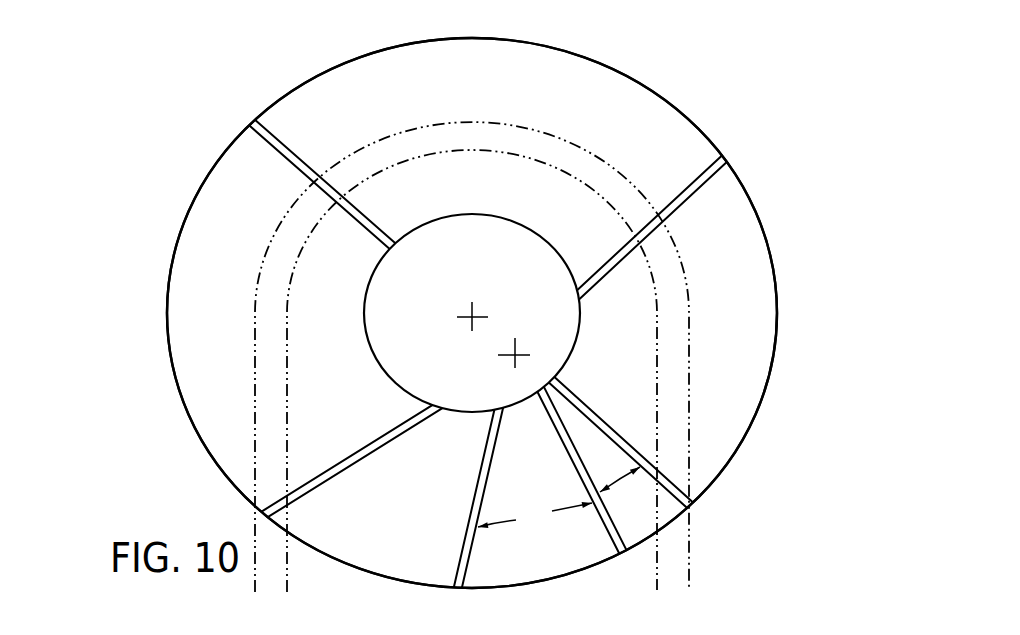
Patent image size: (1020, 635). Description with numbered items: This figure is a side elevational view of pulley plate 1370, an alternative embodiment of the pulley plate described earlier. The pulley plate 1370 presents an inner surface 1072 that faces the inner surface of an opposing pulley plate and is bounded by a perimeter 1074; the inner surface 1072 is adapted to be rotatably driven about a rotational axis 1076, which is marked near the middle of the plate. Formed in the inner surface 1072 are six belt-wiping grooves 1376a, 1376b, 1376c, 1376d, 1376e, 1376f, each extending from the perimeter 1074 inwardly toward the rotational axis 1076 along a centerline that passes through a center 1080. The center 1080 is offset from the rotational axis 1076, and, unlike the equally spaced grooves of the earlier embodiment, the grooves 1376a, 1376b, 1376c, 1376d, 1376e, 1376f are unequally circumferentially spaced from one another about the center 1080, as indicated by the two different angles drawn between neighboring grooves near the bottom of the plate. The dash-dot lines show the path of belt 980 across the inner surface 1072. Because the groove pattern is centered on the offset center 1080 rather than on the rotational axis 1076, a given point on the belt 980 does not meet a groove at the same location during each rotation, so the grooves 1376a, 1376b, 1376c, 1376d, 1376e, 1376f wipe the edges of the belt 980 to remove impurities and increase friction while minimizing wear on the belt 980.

The pulley plate 1370 is at (146, 142).
The inner surface 1072 is at (558, 73).
The perimeter 1074 is at (647, 87).
The belt 980 is at (691, 566).
The rotational axis 1076 is at (463, 313).
The center 1080 is at (517, 350).
The belt-wiping groove 1376a is at (675, 482).
The belt-wiping groove 1376b is at (610, 528).
The belt-wiping groove 1376c is at (467, 560).
The belt-wiping groove 1376d is at (337, 478).
The belt-wiping groove 1376e is at (287, 147).
The belt-wiping groove 1376f is at (703, 189).